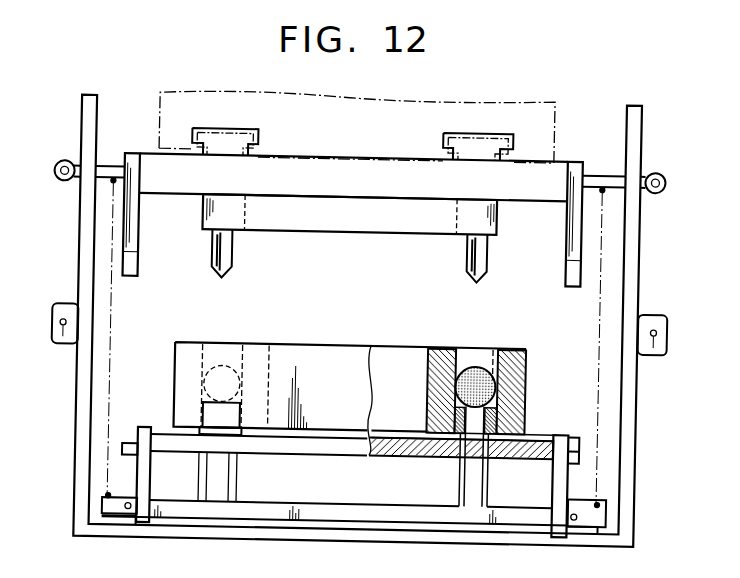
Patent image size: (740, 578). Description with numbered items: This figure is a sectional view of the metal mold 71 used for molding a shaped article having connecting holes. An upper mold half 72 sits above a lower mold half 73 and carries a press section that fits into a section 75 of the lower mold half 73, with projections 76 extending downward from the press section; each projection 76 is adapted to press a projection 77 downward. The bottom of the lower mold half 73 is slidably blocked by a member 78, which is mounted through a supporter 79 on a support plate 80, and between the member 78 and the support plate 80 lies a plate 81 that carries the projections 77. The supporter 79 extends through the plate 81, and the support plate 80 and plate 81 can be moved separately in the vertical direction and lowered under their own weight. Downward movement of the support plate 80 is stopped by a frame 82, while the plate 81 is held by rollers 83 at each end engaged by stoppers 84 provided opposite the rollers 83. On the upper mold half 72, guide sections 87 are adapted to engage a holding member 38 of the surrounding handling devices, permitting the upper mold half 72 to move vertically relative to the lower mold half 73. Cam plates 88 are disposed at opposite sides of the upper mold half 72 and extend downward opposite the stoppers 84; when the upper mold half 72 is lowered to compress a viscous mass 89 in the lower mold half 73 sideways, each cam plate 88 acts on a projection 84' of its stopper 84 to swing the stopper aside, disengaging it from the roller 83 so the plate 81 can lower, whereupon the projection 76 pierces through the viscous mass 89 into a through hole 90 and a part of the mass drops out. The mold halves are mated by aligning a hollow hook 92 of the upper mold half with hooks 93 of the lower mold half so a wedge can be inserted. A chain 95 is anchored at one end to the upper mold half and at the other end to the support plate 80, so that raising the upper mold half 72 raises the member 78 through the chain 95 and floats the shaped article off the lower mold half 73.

The holding member 38 is at (557, 109).
The mold 71 is at (351, 157).
The upper mold half 72 is at (378, 217).
The lower mold half 73 is at (437, 344).
The section of the lower mold half 75 is at (217, 341).
The projection 76 is at (217, 262).
The projection 77 is at (530, 417).
The member 78 is at (534, 381).
The supporter 79 is at (502, 468).
The support plate 80 is at (442, 499).
The plate 81 is at (402, 444).
The frame 82 is at (333, 529).
The roller 83 is at (572, 436).
The stopper 84 is at (356, 480).
The projection on the stopper 84' is at (613, 480).
The guide section 87 is at (243, 133).
The cam plate 88 is at (147, 259).
The viscous mass 89 is at (213, 381).
The through hole 90 is at (463, 411).
The hollow hook 92 is at (68, 159).
The hook 93 is at (66, 320).
The chain 95 is at (119, 349).